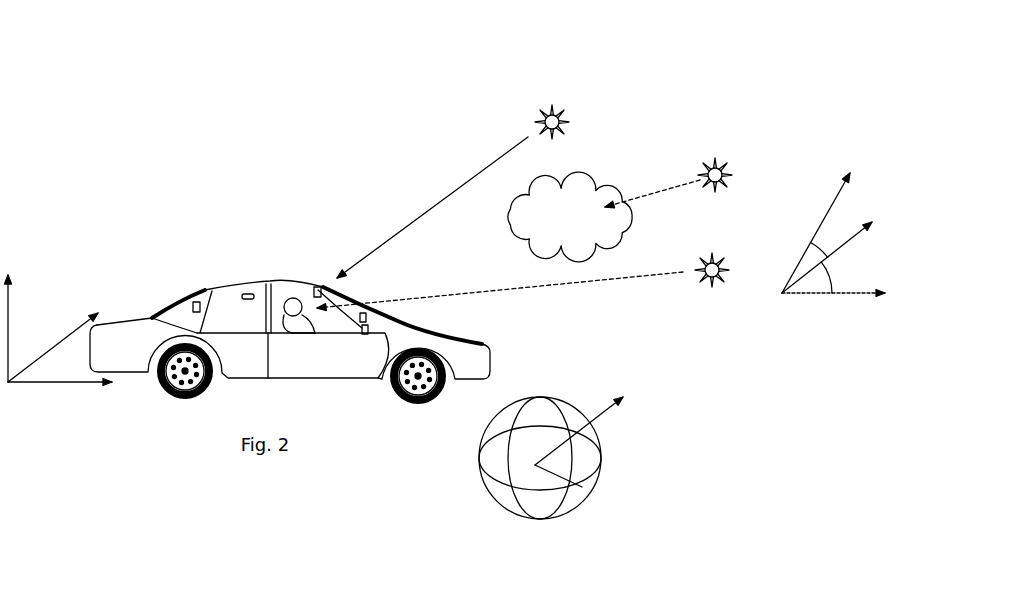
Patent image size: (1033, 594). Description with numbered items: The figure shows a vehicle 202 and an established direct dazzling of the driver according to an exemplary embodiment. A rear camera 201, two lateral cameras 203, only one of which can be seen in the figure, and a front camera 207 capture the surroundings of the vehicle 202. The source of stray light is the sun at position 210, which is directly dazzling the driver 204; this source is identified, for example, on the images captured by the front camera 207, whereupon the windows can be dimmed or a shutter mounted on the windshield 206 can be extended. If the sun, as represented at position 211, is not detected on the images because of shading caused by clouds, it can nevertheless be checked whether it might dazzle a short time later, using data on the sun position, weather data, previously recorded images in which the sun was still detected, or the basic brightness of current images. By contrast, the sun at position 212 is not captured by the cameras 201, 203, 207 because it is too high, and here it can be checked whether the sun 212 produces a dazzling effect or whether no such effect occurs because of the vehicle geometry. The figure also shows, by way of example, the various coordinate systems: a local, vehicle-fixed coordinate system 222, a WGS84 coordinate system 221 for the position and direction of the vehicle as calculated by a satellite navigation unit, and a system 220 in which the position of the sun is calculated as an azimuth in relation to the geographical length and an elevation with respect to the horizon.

The rear camera 201 is at (157, 320).
The vehicle 202 is at (223, 282).
The lateral camera 203 is at (248, 293).
The driver 204 is at (287, 298).
The windshield 206 is at (335, 292).
The front camera 207 is at (350, 333).
The sun position 210 is at (722, 252).
The sun position 211 is at (722, 150).
The sun position 212 is at (567, 100).
The azimuth and elevation system 220 is at (877, 160).
The WGS84 coordinate system 221 is at (577, 390).
The local vehicle-fixed coordinate system 222 is at (50, 270).